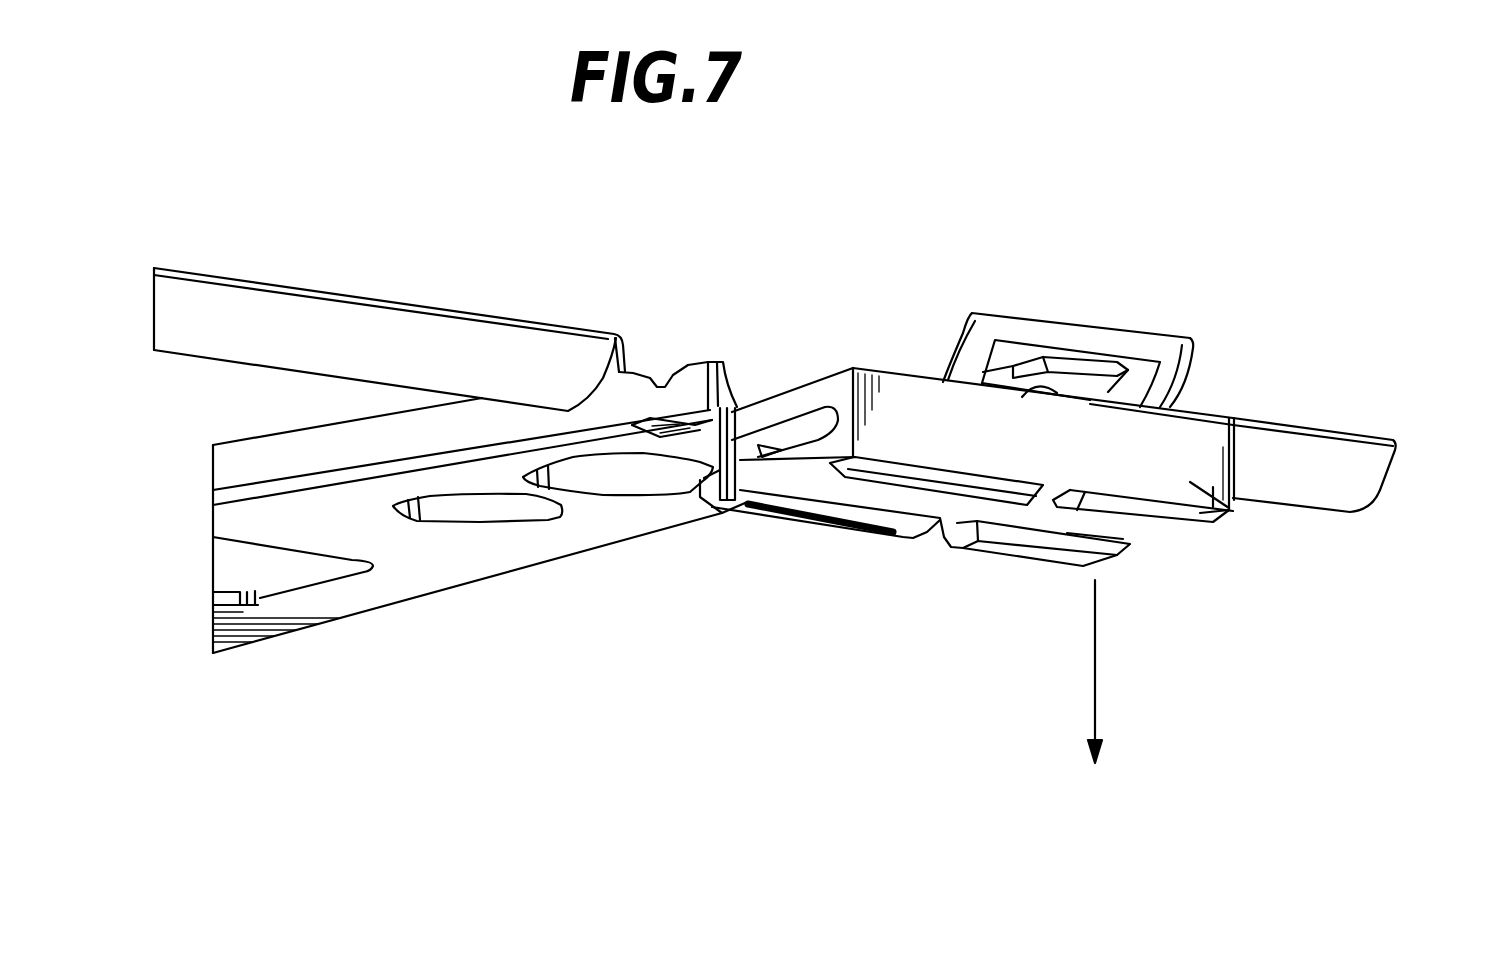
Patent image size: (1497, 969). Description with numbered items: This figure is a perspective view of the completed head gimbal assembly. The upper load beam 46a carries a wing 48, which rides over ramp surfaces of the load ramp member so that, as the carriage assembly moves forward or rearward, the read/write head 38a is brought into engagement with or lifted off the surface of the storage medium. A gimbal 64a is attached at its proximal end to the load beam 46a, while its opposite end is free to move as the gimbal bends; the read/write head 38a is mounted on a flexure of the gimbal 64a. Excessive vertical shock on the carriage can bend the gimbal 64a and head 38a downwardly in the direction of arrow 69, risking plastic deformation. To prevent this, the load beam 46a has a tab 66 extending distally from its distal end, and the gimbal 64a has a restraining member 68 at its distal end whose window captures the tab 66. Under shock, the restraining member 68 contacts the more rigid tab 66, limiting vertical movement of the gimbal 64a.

The wing 48 is at (422, 300).
The upper load beam 46a is at (373, 608).
The gimbal 64a is at (676, 422).
The read/write head 38a is at (1230, 512).
The restraining member 68 is at (1042, 330).
The tab 66 is at (1105, 385).
The arrow 69 is at (1090, 655).